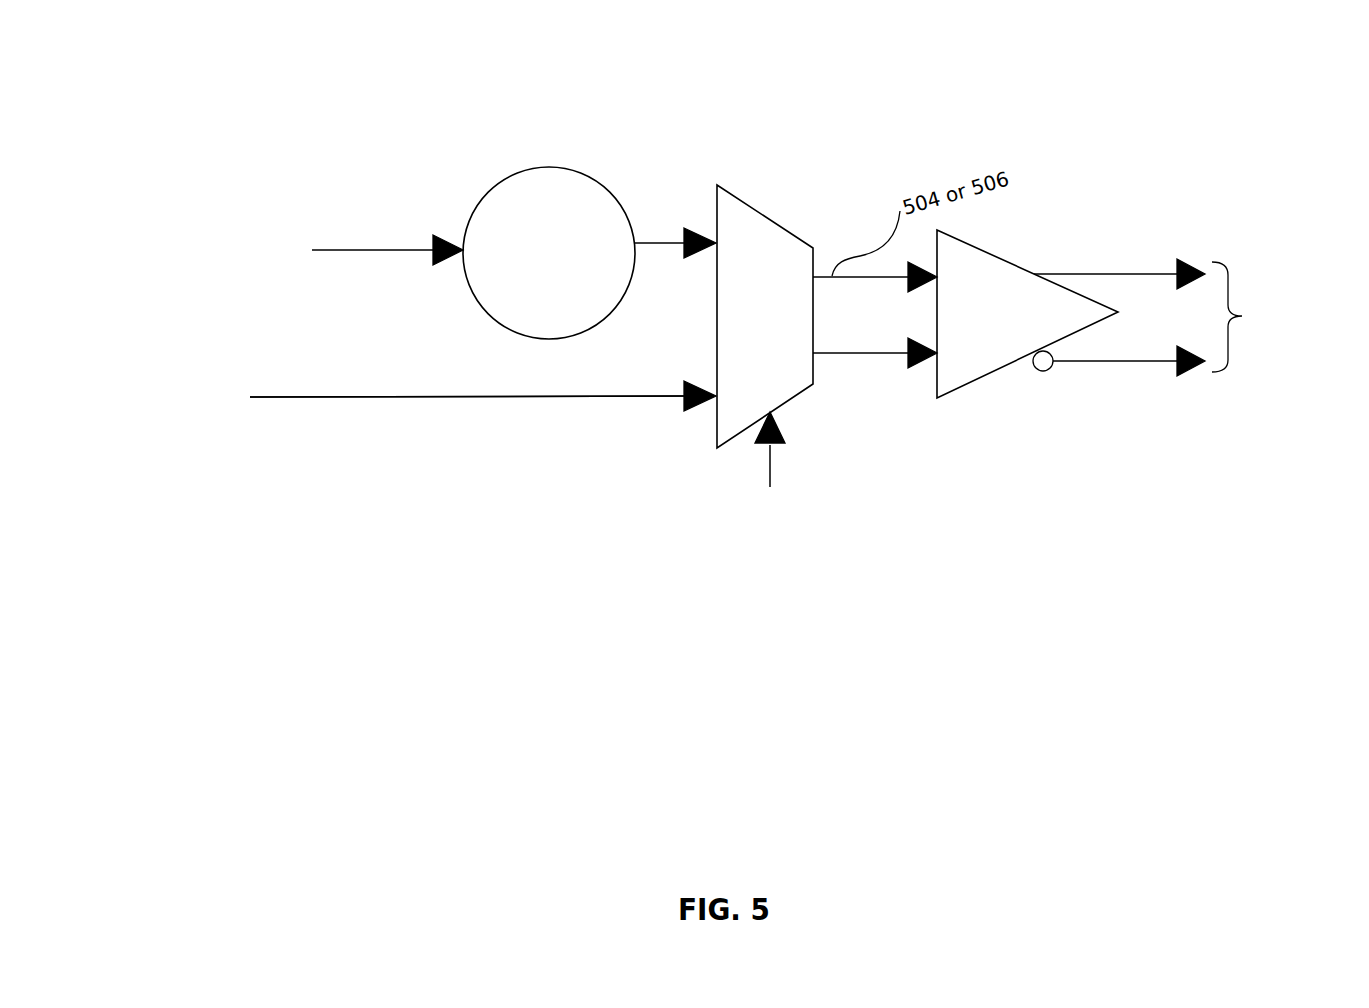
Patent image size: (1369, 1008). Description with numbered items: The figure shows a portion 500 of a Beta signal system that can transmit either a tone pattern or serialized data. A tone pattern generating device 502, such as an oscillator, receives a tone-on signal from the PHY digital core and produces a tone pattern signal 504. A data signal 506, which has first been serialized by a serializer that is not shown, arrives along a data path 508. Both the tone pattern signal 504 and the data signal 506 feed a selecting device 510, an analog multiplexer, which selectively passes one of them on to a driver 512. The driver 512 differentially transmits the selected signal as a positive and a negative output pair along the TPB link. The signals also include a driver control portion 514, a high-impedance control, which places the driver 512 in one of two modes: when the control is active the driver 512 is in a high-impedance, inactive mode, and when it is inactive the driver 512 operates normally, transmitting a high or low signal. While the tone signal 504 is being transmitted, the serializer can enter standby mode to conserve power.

The portion of a Beta signal system 500 is at (1233, 77).
The tone pattern generating device 502 is at (588, 183).
The tone pattern signal 504 is at (647, 242).
The data signal 506 is at (437, 397).
The data path 508 is at (625, 430).
The selecting device 510 is at (720, 192).
The driver 512 is at (1000, 254).
The driver control portion 514 is at (845, 353).